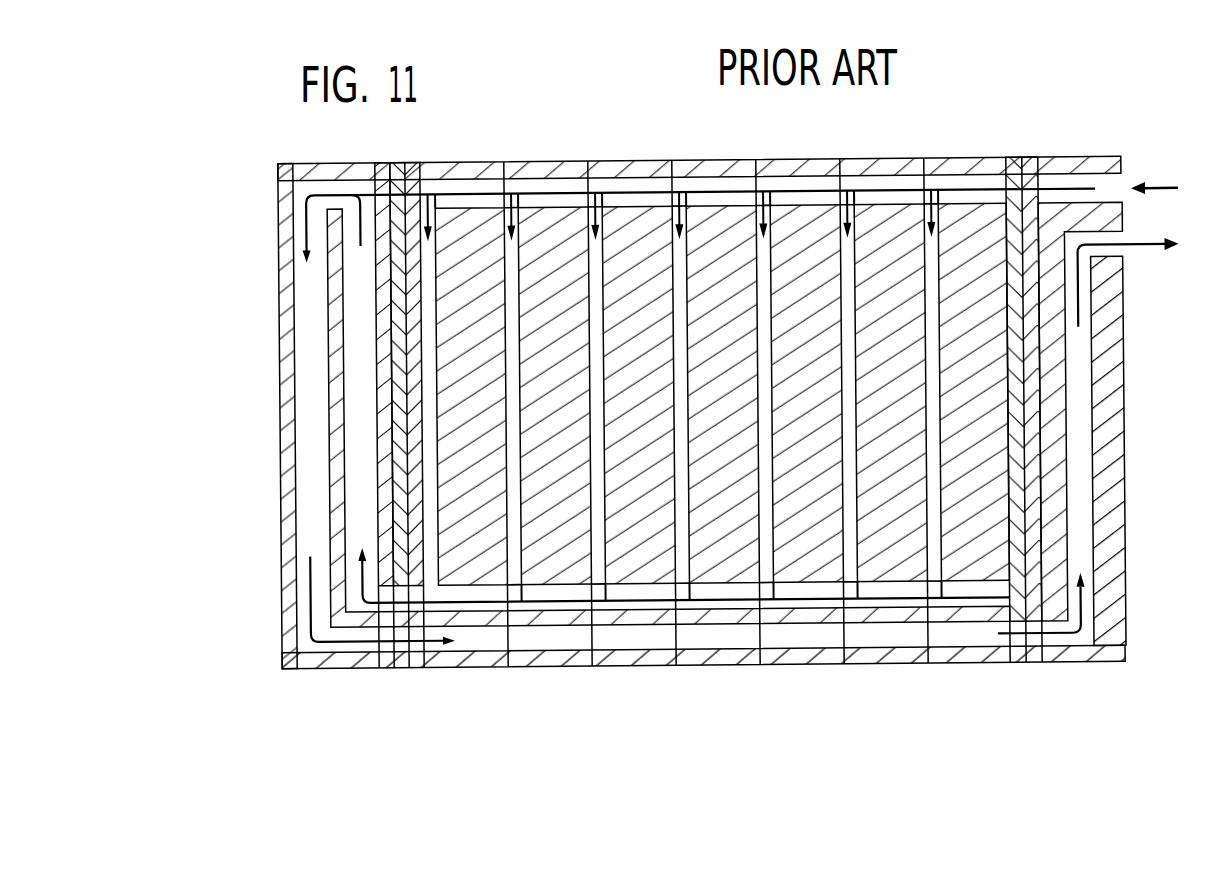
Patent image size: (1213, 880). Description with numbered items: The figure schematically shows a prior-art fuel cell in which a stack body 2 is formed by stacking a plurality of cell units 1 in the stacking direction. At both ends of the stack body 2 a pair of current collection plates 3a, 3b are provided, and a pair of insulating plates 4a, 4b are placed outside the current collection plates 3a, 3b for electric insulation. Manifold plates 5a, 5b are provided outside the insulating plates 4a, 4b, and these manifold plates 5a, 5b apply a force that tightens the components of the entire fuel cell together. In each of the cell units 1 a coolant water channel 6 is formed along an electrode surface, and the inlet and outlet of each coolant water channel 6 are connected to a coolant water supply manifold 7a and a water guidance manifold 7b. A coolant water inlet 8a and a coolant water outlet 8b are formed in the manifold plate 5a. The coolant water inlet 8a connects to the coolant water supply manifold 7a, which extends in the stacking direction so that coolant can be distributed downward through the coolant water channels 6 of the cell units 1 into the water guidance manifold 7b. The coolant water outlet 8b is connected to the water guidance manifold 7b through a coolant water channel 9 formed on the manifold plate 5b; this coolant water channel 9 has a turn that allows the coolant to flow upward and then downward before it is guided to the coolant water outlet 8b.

The cell unit 1 is at (866, 170).
The stack body 2 is at (645, 142).
The current collection plate 3a is at (1022, 664).
The current collection plate 3b is at (416, 668).
The insulating plate 4a is at (1030, 665).
The insulating plate 4b is at (400, 668).
The manifold plate 5a is at (1115, 485).
The manifold plate 5b is at (283, 421).
The coolant water channel 6 is at (597, 305).
The coolant water supply manifold 7a is at (712, 185).
The water guidance manifold 7b is at (727, 614).
The coolant water inlet 8a is at (1115, 186).
The coolant water outlet 8b is at (1120, 250).
The coolant water channel 9 is at (307, 363).